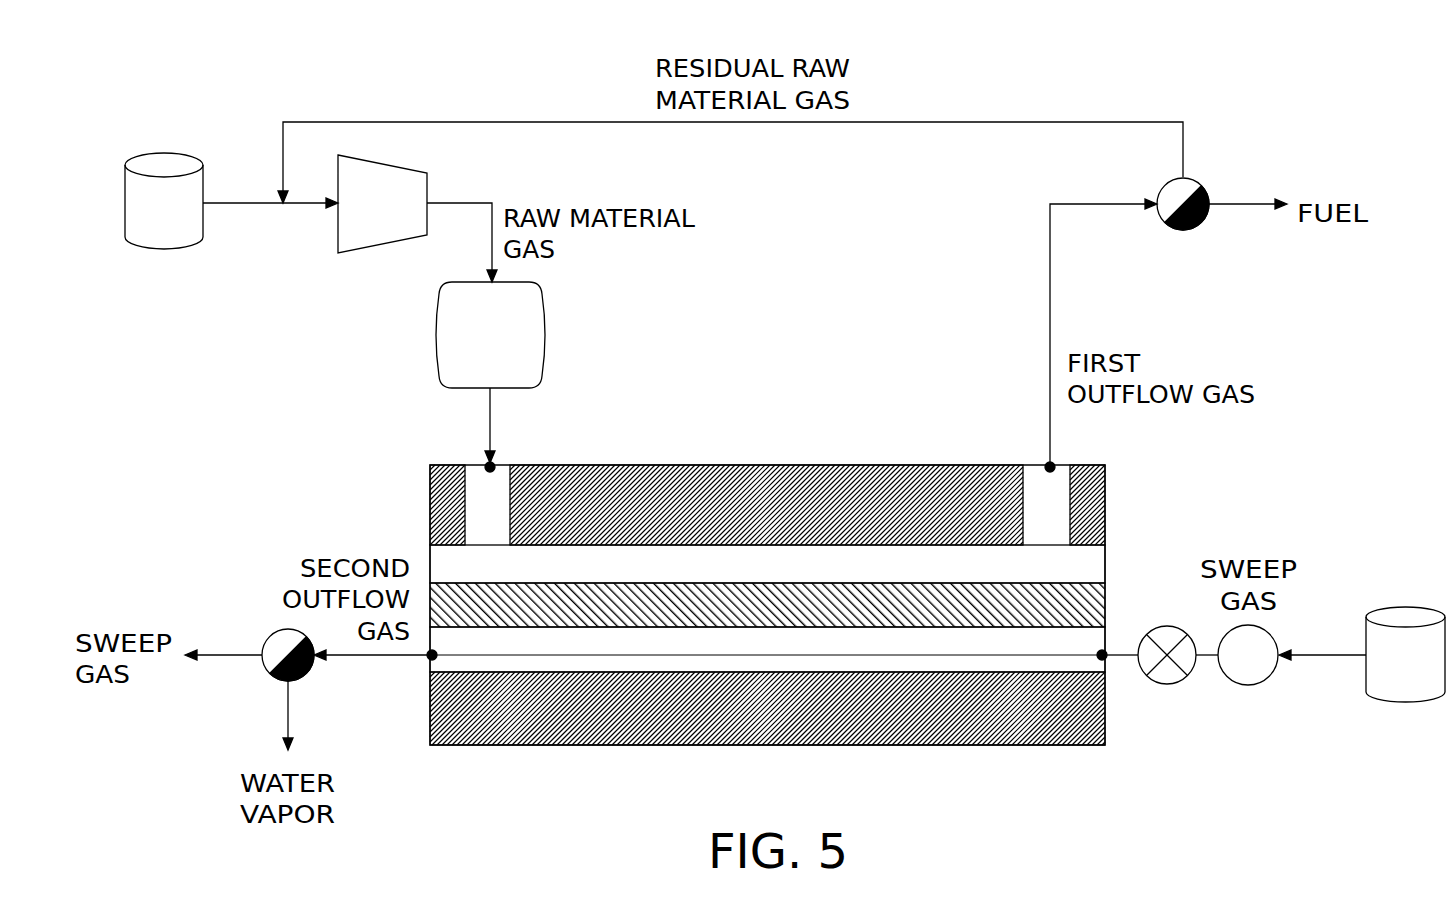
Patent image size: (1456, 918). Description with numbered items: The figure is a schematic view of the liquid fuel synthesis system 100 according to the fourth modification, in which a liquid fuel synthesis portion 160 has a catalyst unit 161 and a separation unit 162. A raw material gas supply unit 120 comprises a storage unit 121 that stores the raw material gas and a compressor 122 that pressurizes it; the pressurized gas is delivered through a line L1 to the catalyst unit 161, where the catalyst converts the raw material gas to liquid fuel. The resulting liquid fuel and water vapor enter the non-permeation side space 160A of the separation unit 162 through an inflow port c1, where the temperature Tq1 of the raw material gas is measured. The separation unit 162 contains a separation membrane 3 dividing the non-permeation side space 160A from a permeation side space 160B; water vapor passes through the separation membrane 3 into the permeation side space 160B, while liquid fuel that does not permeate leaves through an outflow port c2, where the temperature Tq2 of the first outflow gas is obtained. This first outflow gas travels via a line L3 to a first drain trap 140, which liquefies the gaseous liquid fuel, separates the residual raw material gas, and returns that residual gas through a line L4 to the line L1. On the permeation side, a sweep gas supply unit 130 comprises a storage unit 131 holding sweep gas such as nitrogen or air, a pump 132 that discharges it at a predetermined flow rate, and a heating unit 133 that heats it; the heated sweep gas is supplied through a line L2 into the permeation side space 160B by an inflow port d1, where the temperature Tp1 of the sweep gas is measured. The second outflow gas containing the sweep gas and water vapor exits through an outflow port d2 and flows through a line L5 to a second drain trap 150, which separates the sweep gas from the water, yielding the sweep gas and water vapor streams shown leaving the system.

The liquid fuel synthesis system 100 is at (1313, 138).
The raw material gas supply unit 120 is at (257, 344).
The storage unit 121 is at (162, 250).
The compressor 122 is at (343, 255).
The sweep gas supply unit 130 is at (1370, 797).
The storage unit 131 is at (1388, 702).
The pump 132 is at (1250, 685).
The heating unit 133 is at (1167, 684).
The first drain trap 140 is at (1199, 181).
The second drain trap 150 is at (287, 629).
The liquid fuel synthesis portion 160 is at (730, 308).
The catalyst unit 161 is at (544, 340).
The separation unit 162 is at (712, 465).
The non-permeation side space 160A is at (814, 577).
The permeation side space 160B is at (814, 652).
The separation membrane 3 is at (890, 582).
The line L1 is at (467, 203).
The line L2 is at (1113, 654).
The line L3 is at (1067, 204).
The line L4 is at (1002, 122).
The line L5 is at (372, 658).
The inflow port c1 is at (474, 460).
The outflow port c2 is at (1030, 460).
The inflow port d1 is at (1114, 672).
The outflow port d2 is at (422, 672).
The temperature of the raw material gas Tq1 is at (497, 461).
The temperature of the first outflow gas Tq2 is at (1055, 462).
The temperature of the sweep gas Tp1 is at (1106, 650).